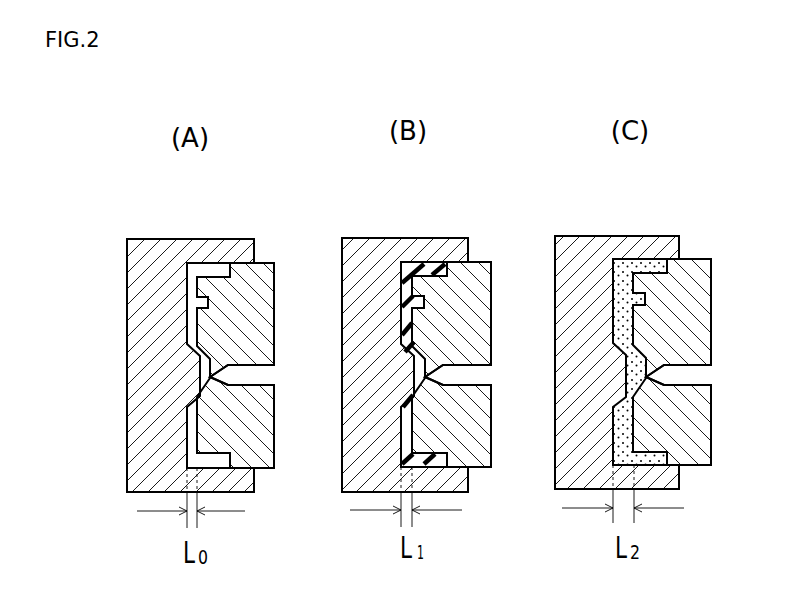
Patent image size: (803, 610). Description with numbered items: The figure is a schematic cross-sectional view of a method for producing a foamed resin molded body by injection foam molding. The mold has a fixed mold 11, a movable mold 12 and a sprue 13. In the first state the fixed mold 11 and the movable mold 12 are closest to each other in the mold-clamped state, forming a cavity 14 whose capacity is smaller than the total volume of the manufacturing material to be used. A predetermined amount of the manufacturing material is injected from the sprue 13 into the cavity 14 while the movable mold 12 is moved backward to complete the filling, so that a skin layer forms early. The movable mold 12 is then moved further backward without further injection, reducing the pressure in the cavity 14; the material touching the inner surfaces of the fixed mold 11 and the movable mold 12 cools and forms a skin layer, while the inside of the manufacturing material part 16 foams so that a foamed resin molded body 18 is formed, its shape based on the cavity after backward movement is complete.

The fixed mold 11 is at (267, 453).
The movable mold 12 is at (133, 452).
The sprue 13 is at (252, 377).
The cavity 14 is at (203, 268).
The manufacturing material part 16 is at (422, 272).
The foamed resin molded body 18 is at (637, 265).